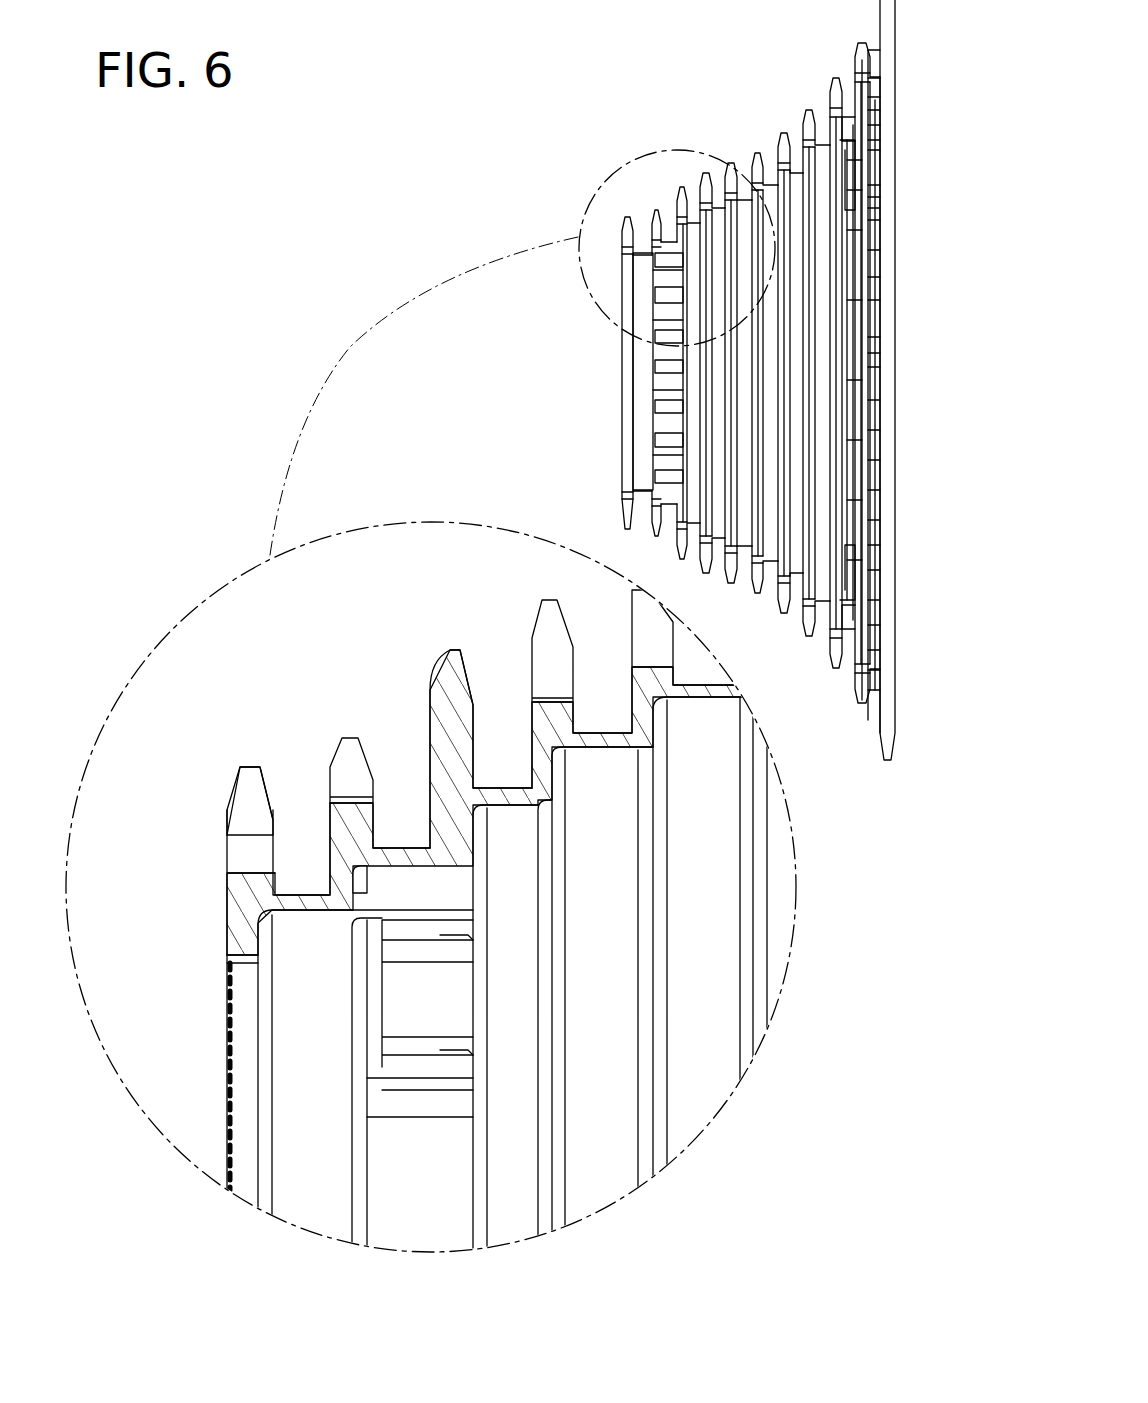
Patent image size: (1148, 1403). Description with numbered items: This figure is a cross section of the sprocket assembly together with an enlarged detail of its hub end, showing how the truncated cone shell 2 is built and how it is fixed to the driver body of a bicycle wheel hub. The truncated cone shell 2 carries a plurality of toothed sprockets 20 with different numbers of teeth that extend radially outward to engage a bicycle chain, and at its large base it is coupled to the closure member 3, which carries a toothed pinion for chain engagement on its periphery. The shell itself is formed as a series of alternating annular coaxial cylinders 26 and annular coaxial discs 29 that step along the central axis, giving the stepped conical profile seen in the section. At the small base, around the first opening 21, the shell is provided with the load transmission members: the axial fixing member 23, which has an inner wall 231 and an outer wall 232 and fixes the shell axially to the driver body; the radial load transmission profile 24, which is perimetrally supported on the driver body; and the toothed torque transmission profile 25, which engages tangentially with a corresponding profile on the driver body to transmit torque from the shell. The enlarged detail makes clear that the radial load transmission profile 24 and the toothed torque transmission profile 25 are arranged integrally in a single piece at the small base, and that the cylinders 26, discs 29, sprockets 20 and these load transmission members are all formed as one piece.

The truncated cone shell 2 is at (638, 385).
The closure member 3 is at (895, 722).
The toothed sprockets 20 is at (350, 765).
The first opening 21 is at (620, 440).
The axial fixing member 23 is at (240, 942).
The radial load transmission profile 24 is at (315, 910).
The toothed torque transmission profile 25 is at (400, 943).
The annular coaxial cylinders 26 is at (302, 885).
The annular coaxial discs 29 is at (530, 732).
The inner wall 231 is at (230, 955).
The outer wall 232 is at (228, 922).